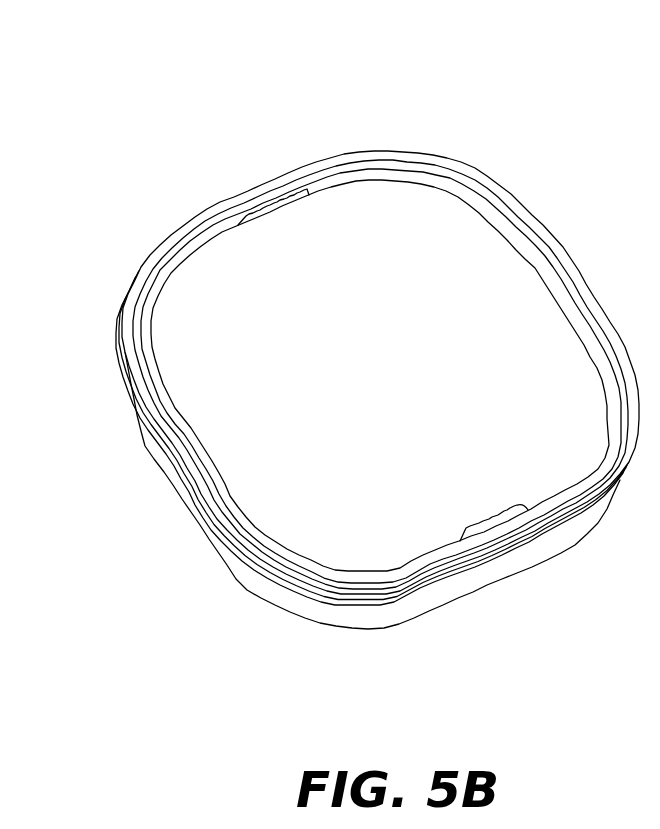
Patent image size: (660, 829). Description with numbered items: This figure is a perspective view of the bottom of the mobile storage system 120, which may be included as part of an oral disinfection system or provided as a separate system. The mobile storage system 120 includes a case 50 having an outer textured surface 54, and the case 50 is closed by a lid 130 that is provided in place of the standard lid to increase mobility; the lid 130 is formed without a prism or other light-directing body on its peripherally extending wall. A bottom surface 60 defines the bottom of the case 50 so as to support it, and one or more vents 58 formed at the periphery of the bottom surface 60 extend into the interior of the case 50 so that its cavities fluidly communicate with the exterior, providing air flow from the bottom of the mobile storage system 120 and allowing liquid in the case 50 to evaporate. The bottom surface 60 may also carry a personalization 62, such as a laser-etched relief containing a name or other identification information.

The mobile storage system 120 is at (330, 344).
The case 50 is at (338, 365).
The outer textured surface 54 is at (178, 470).
The vents 58 is at (290, 200).
The bottom surface 60 is at (448, 215).
The personalization 62 is at (430, 330).
The lid 130 is at (243, 568).